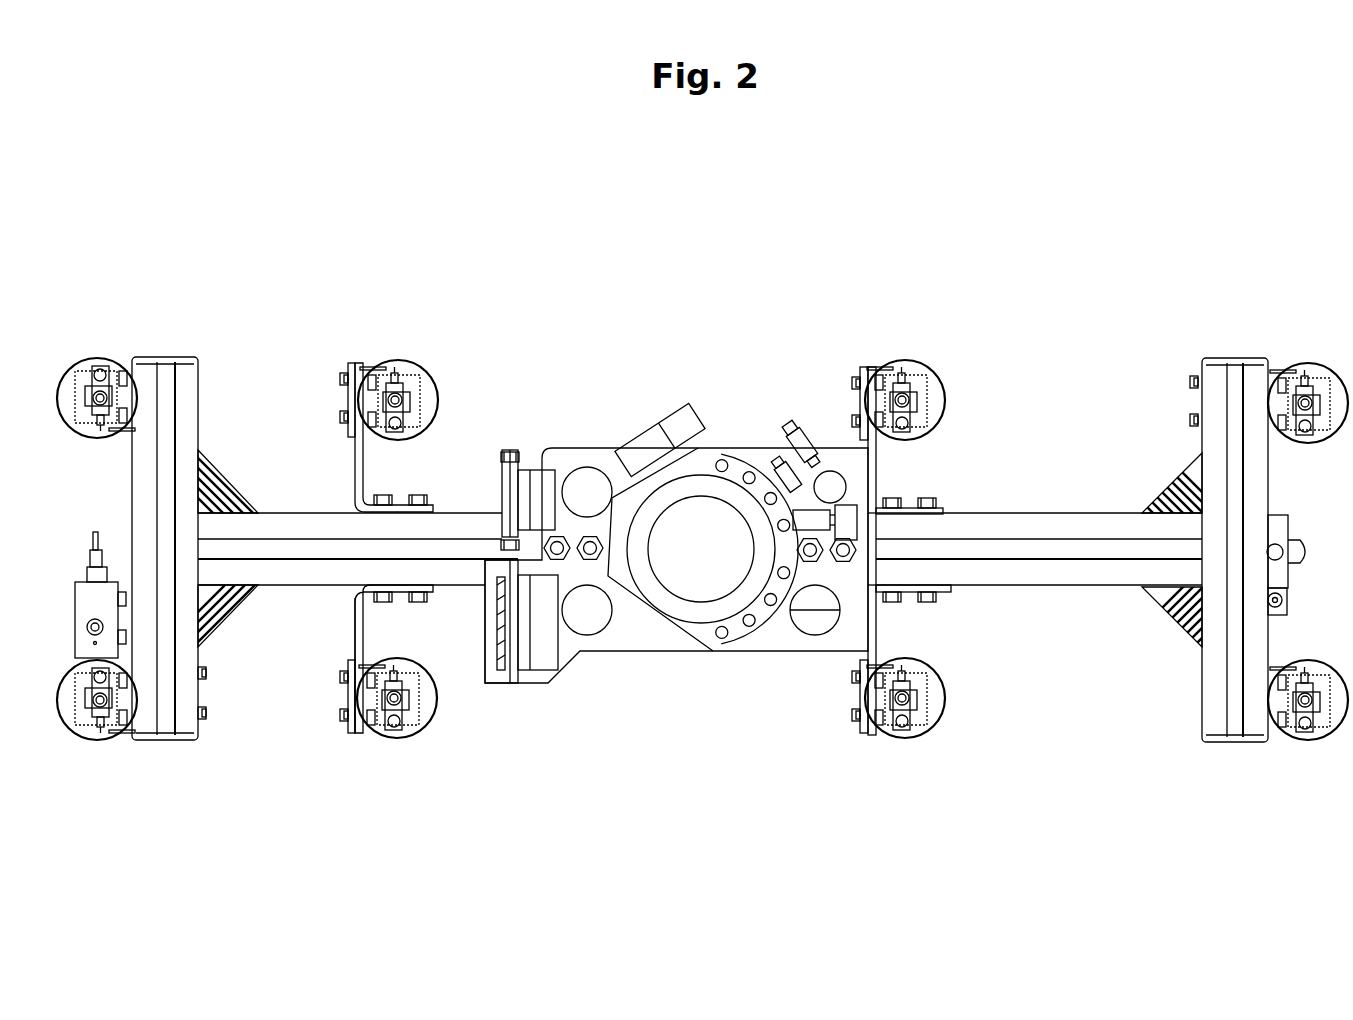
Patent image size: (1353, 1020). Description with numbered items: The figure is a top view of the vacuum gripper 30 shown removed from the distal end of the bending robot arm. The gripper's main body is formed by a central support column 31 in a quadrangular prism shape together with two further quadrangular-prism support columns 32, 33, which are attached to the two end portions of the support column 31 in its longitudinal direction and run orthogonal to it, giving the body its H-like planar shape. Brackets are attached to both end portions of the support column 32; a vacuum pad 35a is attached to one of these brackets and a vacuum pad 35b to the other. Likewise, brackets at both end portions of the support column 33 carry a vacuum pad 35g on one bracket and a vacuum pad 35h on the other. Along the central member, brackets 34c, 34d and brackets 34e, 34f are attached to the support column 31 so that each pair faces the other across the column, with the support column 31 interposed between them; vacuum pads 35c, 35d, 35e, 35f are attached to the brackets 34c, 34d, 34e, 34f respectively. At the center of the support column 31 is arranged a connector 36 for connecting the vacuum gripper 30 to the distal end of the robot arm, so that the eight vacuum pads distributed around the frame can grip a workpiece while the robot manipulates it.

The vacuum gripper 30 is at (1074, 227).
The support column 31 is at (1046, 513).
The support column 32 is at (172, 357).
The support column 33 is at (1237, 357).
The bracket 34c is at (355, 464).
The bracket 34d is at (355, 632).
The bracket 34e is at (876, 448).
The bracket 34f is at (880, 658).
The vacuum pad 35a is at (97, 357).
The vacuum pad 35b is at (100, 742).
The vacuum pad 35c is at (402, 360).
The vacuum pad 35d is at (395, 740).
The vacuum pad 35e is at (905, 360).
The vacuum pad 35f is at (905, 740).
The vacuum pad 35g is at (1308, 362).
The vacuum pad 35h is at (1308, 742).
The connector 36 is at (700, 490).